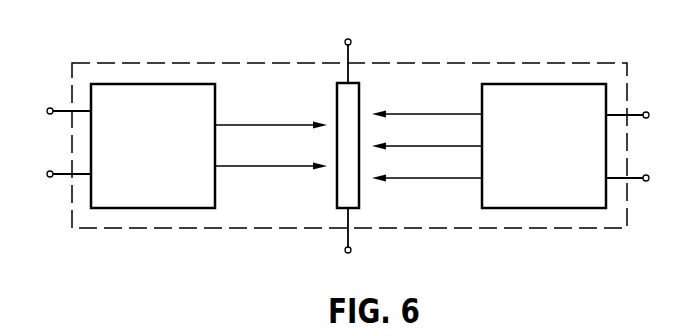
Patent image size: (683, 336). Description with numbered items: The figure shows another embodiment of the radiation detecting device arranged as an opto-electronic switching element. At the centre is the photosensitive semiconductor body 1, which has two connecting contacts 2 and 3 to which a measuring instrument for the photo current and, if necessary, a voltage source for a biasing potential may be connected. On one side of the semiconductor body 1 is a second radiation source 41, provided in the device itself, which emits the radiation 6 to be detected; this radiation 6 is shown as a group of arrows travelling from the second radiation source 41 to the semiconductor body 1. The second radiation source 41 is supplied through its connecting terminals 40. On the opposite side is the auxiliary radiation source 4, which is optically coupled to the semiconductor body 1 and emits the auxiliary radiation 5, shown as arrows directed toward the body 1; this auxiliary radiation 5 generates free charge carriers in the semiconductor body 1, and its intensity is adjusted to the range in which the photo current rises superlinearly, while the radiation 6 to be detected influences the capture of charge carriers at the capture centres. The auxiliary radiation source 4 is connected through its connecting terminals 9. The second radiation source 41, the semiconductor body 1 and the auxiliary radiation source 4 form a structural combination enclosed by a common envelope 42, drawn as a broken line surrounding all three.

The photosensitive semiconductor body 1 is at (347, 193).
The connecting contact 2 is at (352, 247).
The connecting contact 3 is at (351, 47).
The auxiliary radiation source 4 is at (519, 189).
The auxiliary radiation 5 is at (443, 114).
The radiation to be detected 6 is at (263, 125).
The connecting terminals of the radiation source 9 is at (633, 119).
The connecting terminals 40 is at (63, 117).
The second radiation source 41 is at (137, 193).
The common envelope 42 is at (553, 232).